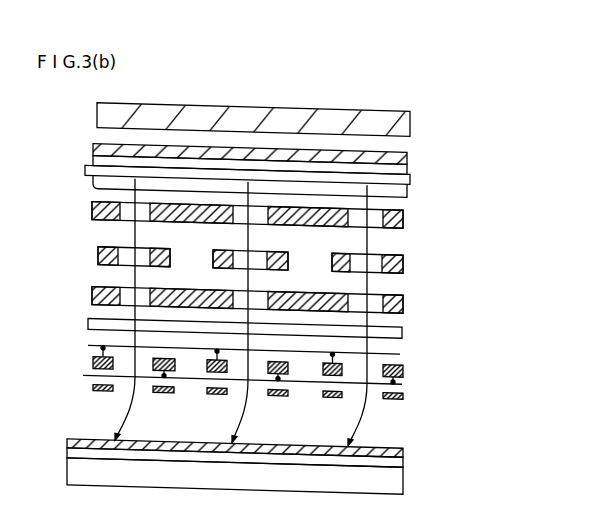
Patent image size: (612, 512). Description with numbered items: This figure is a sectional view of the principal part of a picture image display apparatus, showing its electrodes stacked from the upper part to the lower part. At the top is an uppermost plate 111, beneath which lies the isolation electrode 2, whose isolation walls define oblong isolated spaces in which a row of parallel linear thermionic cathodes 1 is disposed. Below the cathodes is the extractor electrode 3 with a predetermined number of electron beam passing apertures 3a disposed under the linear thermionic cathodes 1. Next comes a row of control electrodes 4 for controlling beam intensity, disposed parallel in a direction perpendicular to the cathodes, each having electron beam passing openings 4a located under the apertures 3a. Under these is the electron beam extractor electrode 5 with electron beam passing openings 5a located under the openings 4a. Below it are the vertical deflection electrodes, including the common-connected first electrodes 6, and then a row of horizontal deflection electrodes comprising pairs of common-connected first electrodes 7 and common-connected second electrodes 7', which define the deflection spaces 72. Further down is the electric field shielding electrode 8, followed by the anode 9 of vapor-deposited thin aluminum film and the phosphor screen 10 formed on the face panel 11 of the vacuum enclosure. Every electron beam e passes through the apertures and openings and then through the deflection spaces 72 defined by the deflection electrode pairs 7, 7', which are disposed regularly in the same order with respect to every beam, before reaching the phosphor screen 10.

The upper plate 111 is at (410, 113).
The isolation electrode 2 is at (408, 160).
The linear thermionic cathode 1 is at (411, 170).
The electron beam passing aperture 3a is at (380, 195).
The extractor electrode 3 is at (403, 211).
The electron beam passing opening 4a is at (380, 242).
The control electrode 4 is at (403, 259).
The electron beam passing opening 5a is at (380, 282).
The electron beam extractor electrode 5 is at (403, 299).
The first electrode 6 is at (402, 325).
The first electrode 7 is at (239, 364).
The second electrode 7' is at (296, 370).
The deflection space 72 is at (127, 349).
The electric field shielding electrode 8 is at (92, 386).
The electron beam e is at (127, 402).
The anode 9 is at (405, 441).
The phosphor screen 10 is at (405, 451).
The face panel 11 is at (405, 469).